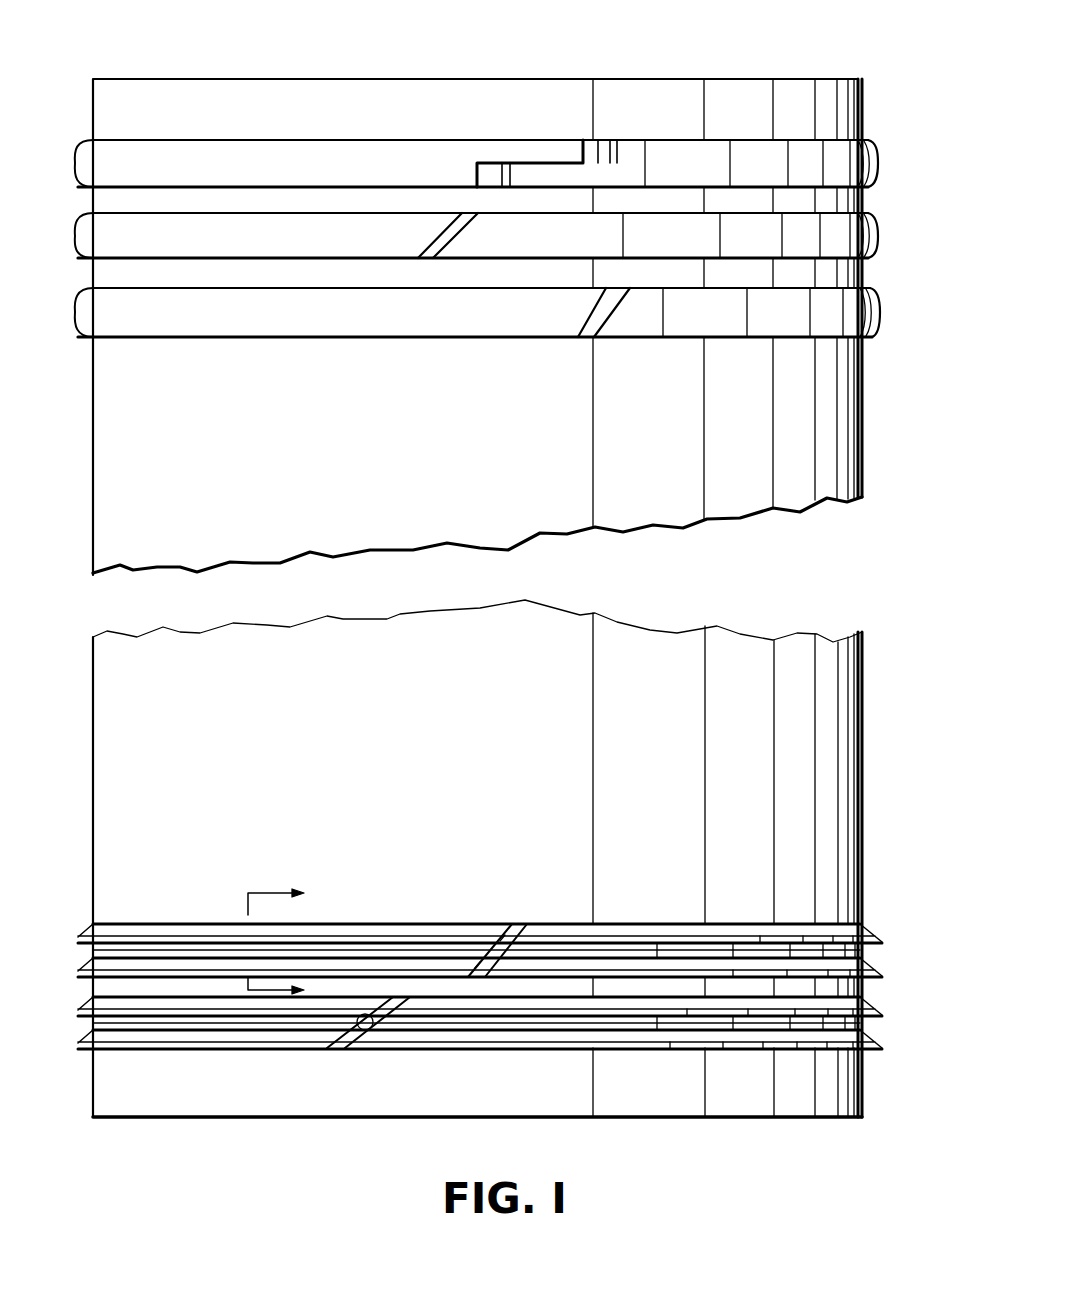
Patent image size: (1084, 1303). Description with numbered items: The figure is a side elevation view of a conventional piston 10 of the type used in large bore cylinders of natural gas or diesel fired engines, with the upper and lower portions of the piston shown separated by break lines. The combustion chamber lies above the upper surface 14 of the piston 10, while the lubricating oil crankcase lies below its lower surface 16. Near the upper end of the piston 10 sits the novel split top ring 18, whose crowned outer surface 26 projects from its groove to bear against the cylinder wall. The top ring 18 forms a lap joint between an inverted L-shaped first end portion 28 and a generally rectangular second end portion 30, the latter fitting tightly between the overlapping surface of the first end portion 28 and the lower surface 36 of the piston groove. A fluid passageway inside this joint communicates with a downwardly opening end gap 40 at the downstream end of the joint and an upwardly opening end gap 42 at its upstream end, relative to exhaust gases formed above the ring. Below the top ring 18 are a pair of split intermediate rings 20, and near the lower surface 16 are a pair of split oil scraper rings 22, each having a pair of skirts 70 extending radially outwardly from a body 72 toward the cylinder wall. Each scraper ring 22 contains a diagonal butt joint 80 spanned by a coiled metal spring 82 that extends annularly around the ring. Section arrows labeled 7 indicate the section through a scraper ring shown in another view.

The piston 10 is at (863, 462).
The upper surface 14 is at (520, 77).
The lower surface 16 is at (565, 1118).
The split top ring 18 is at (318, 160).
The split intermediate rings 20 is at (350, 320).
The split oil wiper or scraper rings 22 is at (193, 1037).
The outer surface 26 is at (877, 167).
The first end portion 28 is at (552, 150).
The second end portion 30 is at (540, 175).
The lower surface of the groove 36 is at (498, 162).
The downwardly opening slot or end gap 40 is at (485, 175).
The upwardly opening slot or end gap 42 is at (597, 157).
The skirts 70 is at (877, 1030).
The body 72 is at (870, 947).
The diagonal butt joint 80 is at (515, 927).
The coiled metal spring 82 is at (353, 1008).
The section line 7- 7 is at (289, 933).